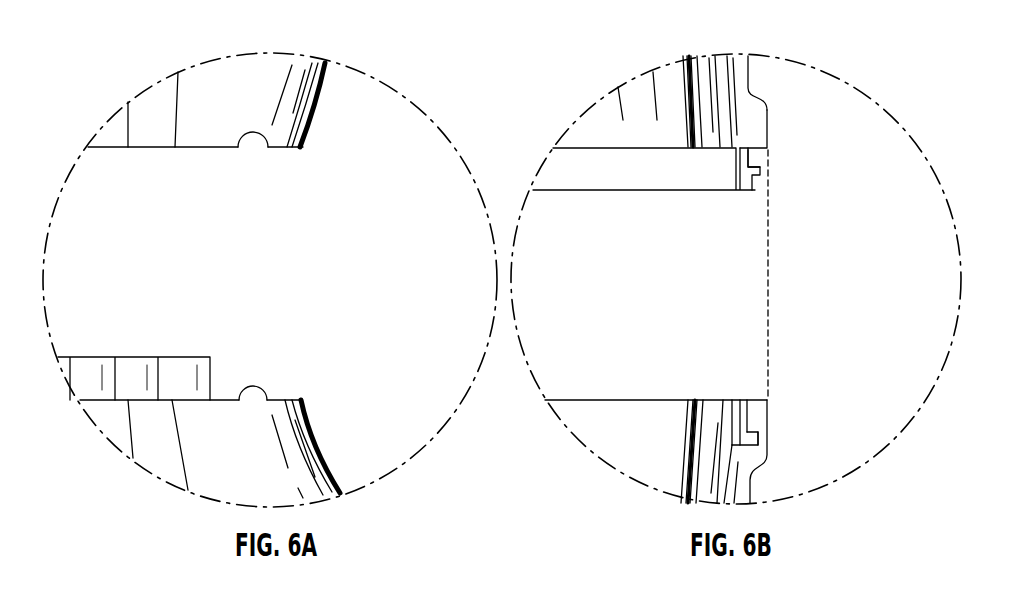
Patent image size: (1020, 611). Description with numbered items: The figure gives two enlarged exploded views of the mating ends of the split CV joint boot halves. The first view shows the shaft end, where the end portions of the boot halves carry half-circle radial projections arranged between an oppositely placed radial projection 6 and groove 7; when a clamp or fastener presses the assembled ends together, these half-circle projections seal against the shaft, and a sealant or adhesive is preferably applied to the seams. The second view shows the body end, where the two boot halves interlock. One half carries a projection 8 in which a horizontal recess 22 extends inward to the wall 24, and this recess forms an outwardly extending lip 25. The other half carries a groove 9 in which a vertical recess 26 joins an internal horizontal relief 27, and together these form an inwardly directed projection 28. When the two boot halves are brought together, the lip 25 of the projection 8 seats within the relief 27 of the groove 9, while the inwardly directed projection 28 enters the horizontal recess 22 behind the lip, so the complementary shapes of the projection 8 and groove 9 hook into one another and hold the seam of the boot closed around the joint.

In FIG. 6A, the radial projection 6 is at (253, 388).
In FIG. 6A, the groove 7 is at (253, 137).
In FIG. 6B, the projection 8 is at (718, 205).
In FIG. 6B, the groove 9 is at (697, 363).
In FIG. 6B, the horizontal recess 22 is at (763, 157).
In FIG. 6B, the wall 24 is at (761, 167).
In FIG. 6B, the outwardly extending lip 25 is at (750, 183).
In FIG. 6B, the vertical recess 26 is at (741, 399).
In FIG. 6B, the internal horizontal relief 27 is at (758, 438).
In FIG. 6B, the inwardly directed projection 28 is at (768, 408).